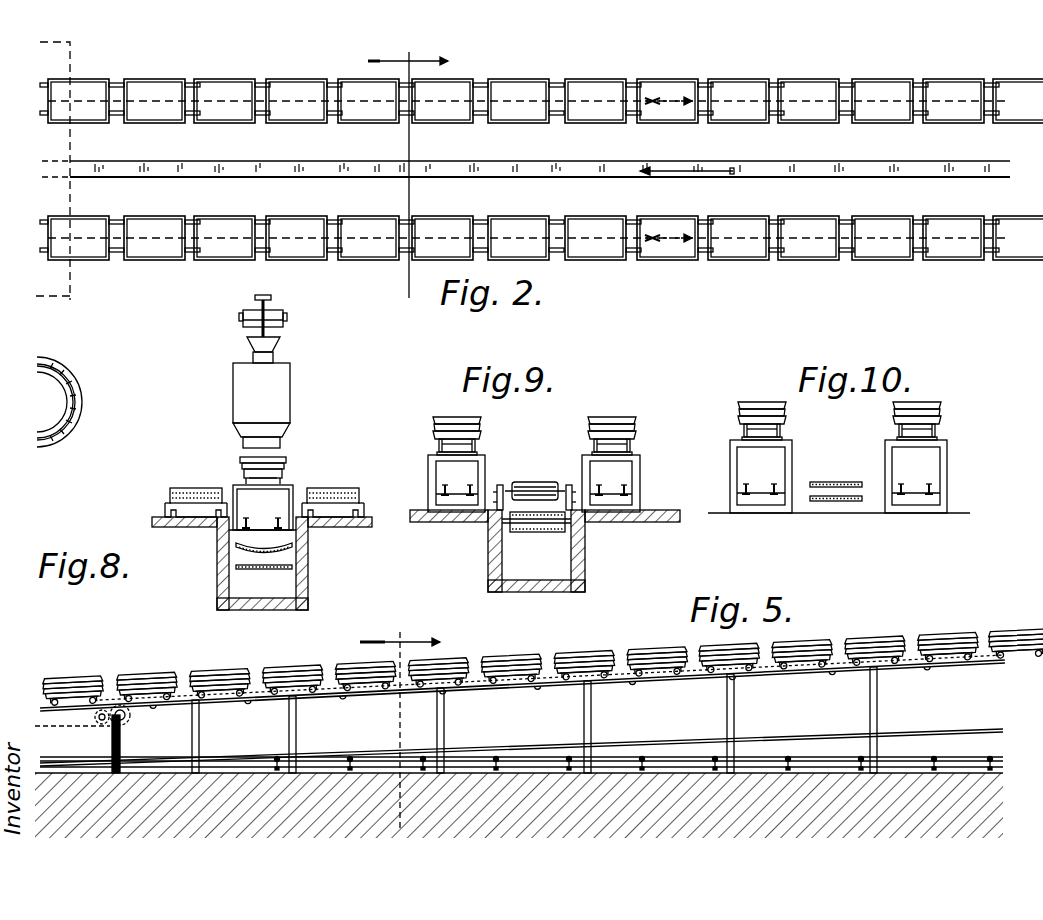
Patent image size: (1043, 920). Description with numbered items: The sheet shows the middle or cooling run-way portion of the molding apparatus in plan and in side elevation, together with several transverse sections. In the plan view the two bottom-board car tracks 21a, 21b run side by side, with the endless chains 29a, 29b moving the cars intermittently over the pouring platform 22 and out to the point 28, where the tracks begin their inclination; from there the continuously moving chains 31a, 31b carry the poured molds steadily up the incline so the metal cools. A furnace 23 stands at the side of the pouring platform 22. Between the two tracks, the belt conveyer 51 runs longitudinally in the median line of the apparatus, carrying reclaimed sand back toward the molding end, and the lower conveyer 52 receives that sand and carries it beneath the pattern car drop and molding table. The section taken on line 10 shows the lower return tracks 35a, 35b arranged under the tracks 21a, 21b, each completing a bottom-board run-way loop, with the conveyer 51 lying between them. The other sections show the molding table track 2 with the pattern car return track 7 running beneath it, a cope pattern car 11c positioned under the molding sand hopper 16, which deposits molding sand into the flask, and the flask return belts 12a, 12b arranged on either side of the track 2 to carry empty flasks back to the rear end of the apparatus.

In FIG. 8, the molding table track 2 is at (243, 485).
In FIG. 8, the pattern car return track 7 is at (250, 521).
In FIG. 2, the section line 10 is at (378, 310).
In FIG. 5, the section line 10 is at (400, 729).
In FIG. 8, the cope pattern car 11c is at (282, 461).
In FIG. 8, the flask return belt 12a is at (175, 487).
In FIG. 8, the flask return belt 12b is at (350, 487).
In FIG. 8, the molding sand hopper 16 is at (286, 397).
In FIG. 2, the bottom-board car track 21a is at (333, 216).
In FIG. 9, the bottom-board car track 21a is at (590, 455).
In FIG. 10, the bottom-board car track 21a is at (893, 440).
In FIG. 5, the bottom-board car track 21a is at (541, 690).
In FIG. 2, the bottom-board car track 21b is at (333, 123).
In FIG. 9, the bottom-board car track 21b is at (483, 455).
In FIG. 10, the bottom-board car track 21b is at (786, 440).
In FIG. 2, the pouring platform 22 is at (55, 279).
In FIG. 8, the furnace 23 is at (58, 402).
In FIG. 2, the point of inclination 28 is at (116, 123).
In FIG. 5, the point of inclination 28 is at (116, 703).
In FIG. 2, the endless chain 29a is at (78, 238).
In FIG. 5, the endless chain 29a is at (75, 713).
In FIG. 2, the endless chain 29b is at (78, 101).
In FIG. 2, the continuously moving chain 31a is at (224, 238).
In FIG. 5, the continuously moving chain 31a is at (235, 704).
In FIG. 2, the continuously moving chain 31b is at (224, 101).
In FIG. 9, the bottom-board car return track 35a is at (614, 495).
In FIG. 10, the bottom-board car return track 35a is at (896, 488).
In FIG. 5, the bottom-board car return track 35a is at (698, 740).
In FIG. 9, the bottom-board car return track 35b is at (473, 495).
In FIG. 10, the bottom-board car return track 35b is at (775, 488).
In FIG. 2, the belt conveyer 51 is at (183, 165).
In FIG. 9, the belt conveyer 51 is at (527, 489).
In FIG. 10, the belt conveyer 51 is at (826, 482).
In FIG. 5, the belt conveyer 51 is at (376, 755).
In FIG. 8, the conveyer 52 is at (273, 551).
In FIG. 9, the conveyer 52 is at (541, 520).